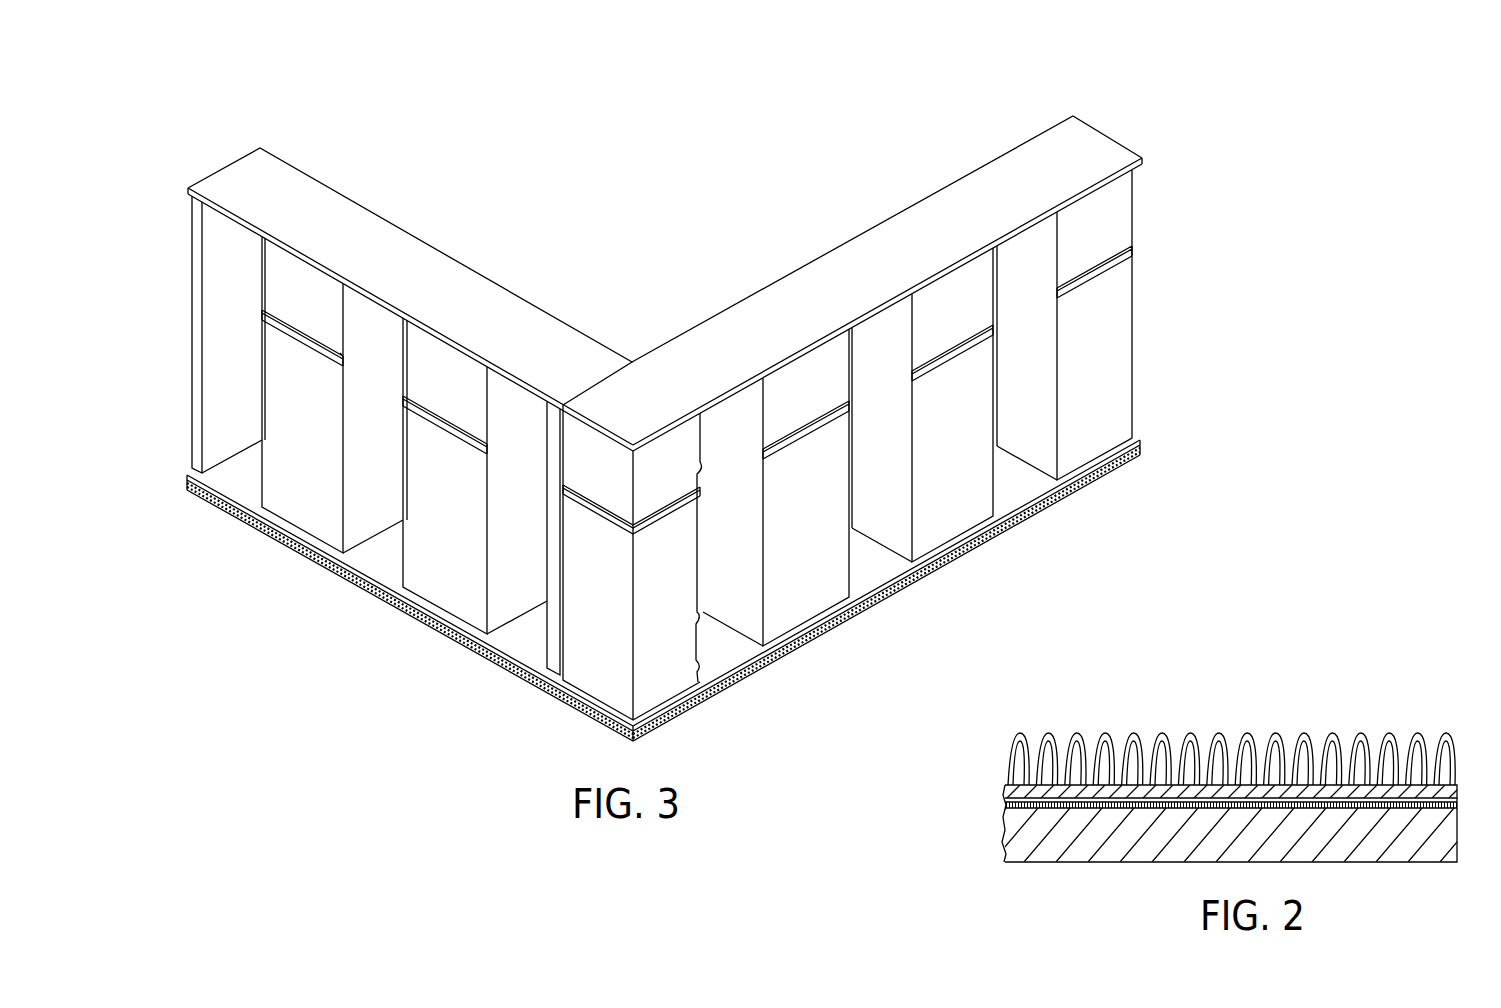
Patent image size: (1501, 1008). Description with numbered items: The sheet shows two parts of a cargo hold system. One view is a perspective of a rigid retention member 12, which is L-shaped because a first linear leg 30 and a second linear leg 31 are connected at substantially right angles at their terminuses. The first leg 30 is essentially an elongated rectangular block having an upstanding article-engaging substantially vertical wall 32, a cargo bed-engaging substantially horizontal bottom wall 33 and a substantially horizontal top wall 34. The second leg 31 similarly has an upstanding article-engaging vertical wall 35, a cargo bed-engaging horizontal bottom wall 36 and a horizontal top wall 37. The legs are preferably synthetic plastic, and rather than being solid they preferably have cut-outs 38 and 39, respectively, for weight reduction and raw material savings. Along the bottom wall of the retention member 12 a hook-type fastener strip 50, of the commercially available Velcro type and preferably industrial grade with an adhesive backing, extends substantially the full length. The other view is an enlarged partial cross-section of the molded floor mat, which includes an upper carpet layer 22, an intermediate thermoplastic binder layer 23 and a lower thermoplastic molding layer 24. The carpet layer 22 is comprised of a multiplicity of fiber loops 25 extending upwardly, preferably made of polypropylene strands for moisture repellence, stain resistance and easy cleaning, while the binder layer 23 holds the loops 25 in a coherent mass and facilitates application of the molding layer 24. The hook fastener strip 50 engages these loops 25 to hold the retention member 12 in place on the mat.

In FIG. 3, the rigid retention member 12 is at (222, 153).
In FIG. 3, the first linear leg 30 is at (437, 257).
In FIG. 3, the second linear leg 31 is at (833, 258).
In FIG. 3, the vertical wall 32 is at (300, 520).
In FIG. 3, the bottom wall 33 is at (433, 617).
In FIG. 3, the top wall 34 is at (548, 325).
In FIG. 3, the vertical wall 35 is at (1130, 347).
In FIG. 3, the bottom wall 36 is at (1030, 508).
In FIG. 3, the top wall 37 is at (960, 187).
In FIG. 3, the cut-outs 38 is at (210, 362).
In FIG. 3, the cut-outs 39 is at (870, 578).
In FIG. 3, the hook-type fastener strip 50 is at (507, 670).
In FIG. 2, the upper carpet layer 22 is at (1005, 787).
In FIG. 2, the intermediate thermoplastic binder layer 23 is at (1005, 802).
In FIG. 2, the lower thermoplastic molding layer 24 is at (1008, 837).
In FIG. 2, the fiber loops 25 is at (1262, 745).